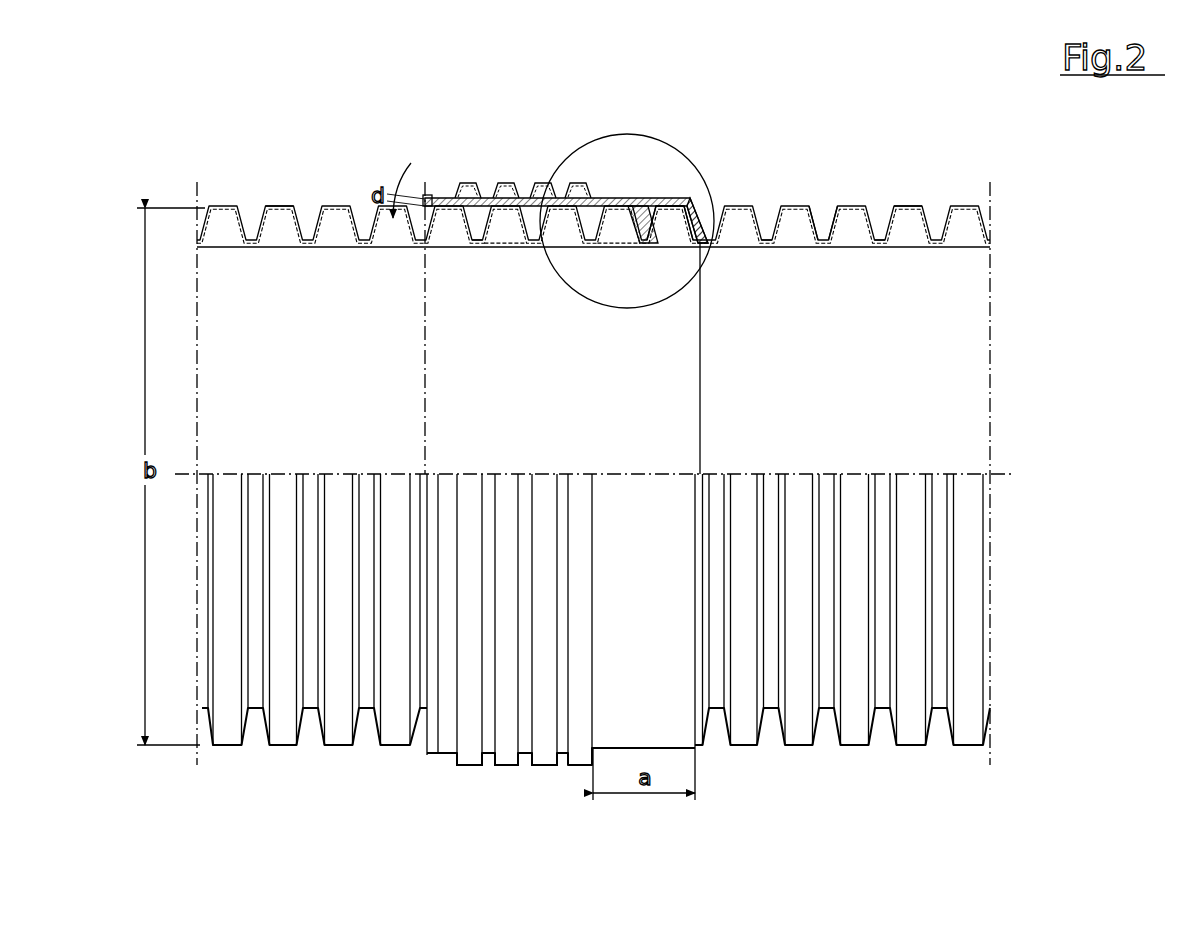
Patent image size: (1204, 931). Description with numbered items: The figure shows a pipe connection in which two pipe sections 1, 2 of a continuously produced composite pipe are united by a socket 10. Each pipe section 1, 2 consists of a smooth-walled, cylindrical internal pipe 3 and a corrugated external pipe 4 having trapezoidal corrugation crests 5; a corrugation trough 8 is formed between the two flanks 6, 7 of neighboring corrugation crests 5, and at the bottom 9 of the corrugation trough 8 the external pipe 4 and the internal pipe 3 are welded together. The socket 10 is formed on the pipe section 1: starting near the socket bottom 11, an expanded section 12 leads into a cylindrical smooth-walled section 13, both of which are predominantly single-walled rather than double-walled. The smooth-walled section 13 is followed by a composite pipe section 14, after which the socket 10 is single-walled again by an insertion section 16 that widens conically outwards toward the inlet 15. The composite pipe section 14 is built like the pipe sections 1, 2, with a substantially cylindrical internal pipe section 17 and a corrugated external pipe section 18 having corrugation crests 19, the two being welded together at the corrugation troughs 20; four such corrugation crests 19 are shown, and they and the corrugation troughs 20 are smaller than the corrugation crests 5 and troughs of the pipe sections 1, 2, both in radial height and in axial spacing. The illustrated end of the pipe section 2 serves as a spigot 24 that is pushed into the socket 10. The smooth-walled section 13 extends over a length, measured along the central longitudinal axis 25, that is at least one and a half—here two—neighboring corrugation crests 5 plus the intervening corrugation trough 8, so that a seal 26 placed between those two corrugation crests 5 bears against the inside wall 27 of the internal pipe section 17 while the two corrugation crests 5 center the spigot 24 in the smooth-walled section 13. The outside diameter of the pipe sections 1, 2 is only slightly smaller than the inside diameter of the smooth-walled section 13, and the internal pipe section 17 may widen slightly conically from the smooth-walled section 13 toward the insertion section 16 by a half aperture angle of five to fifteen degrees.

The pipe section 1 is at (941, 190).
The pipe section 2 is at (324, 196).
The internal pipe 3 is at (280, 250).
The external pipe 4 is at (278, 205).
The corrugation crest 5 is at (340, 746).
The flank 6 is at (818, 226).
The flank 7 is at (831, 226).
The corrugation trough 8 is at (761, 226).
The bottom of the corrugation trough 9 is at (883, 226).
The socket 10 is at (487, 177).
The socket bottom 11 is at (681, 248).
The expanded section 12 is at (698, 212).
The smooth-walled section 13 is at (622, 197).
The composite pipe section 14 is at (539, 185).
The inlet 15 is at (423, 317).
The insertion section 16 is at (430, 222).
The internal pipe section 17 is at (477, 249).
The external pipe section 18 is at (508, 769).
The corrugation crest 19 is at (470, 768).
The corrugation trough 20 is at (560, 762).
The spigot 24 is at (500, 254).
The central longitudinal axis 25 is at (606, 473).
The seal 26 is at (620, 248).
The inside wall 27 is at (647, 230).